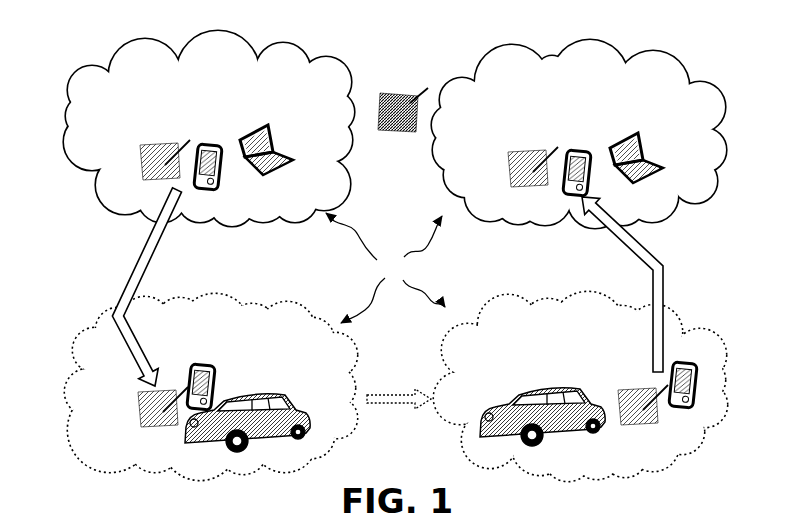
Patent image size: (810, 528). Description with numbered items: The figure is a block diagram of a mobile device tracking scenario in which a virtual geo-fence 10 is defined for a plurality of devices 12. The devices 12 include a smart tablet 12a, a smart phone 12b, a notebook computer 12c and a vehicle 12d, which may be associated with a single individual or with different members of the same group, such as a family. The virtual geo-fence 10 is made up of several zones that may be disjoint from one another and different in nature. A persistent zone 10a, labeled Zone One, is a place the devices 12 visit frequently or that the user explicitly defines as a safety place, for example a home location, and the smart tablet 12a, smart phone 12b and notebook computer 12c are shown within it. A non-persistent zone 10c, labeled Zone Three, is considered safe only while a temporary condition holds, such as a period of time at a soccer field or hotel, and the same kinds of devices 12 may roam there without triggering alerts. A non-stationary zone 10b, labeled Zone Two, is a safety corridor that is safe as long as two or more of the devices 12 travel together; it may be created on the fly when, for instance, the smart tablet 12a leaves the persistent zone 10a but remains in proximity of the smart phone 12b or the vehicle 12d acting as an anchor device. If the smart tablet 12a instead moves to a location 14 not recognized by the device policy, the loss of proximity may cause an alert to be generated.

The virtual geo-fence 10 is at (385, 268).
The persistent zone 10a is at (302, 37).
The non-stationary zone 10b is at (398, 349).
The non-persistent zone 10c is at (515, 42).
The devices 12 is at (88, 383).
The smart tablet 12a is at (140, 163).
The smart phone 12b is at (203, 189).
The notebook computer 12c is at (263, 174).
The vehicle 12d is at (213, 447).
The location 14 is at (410, 80).